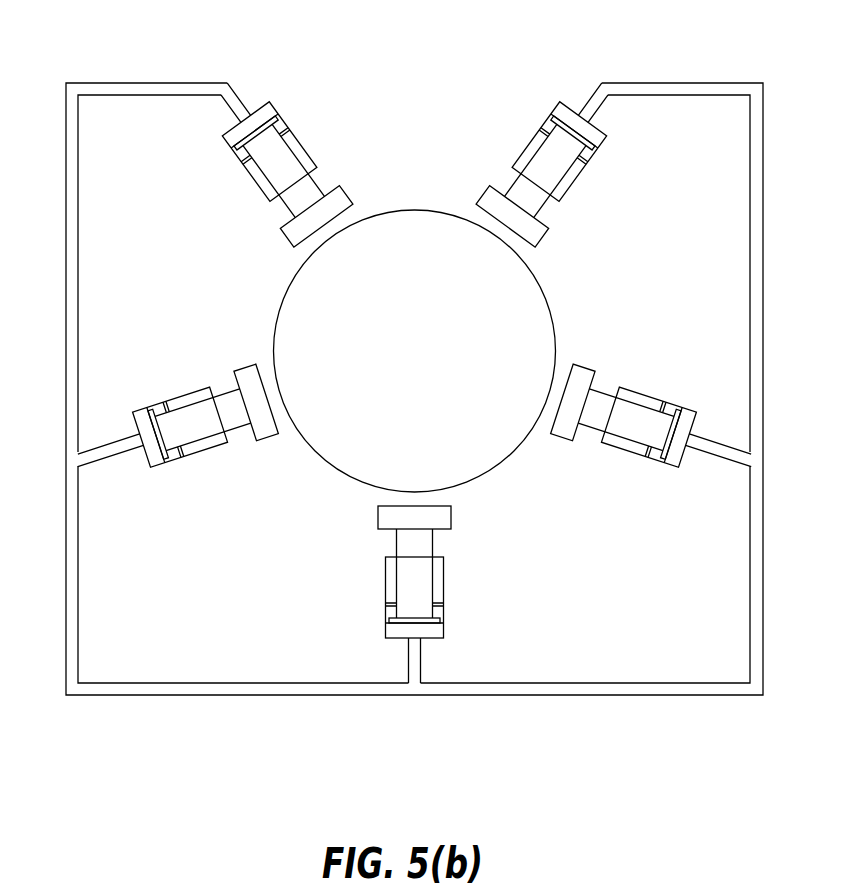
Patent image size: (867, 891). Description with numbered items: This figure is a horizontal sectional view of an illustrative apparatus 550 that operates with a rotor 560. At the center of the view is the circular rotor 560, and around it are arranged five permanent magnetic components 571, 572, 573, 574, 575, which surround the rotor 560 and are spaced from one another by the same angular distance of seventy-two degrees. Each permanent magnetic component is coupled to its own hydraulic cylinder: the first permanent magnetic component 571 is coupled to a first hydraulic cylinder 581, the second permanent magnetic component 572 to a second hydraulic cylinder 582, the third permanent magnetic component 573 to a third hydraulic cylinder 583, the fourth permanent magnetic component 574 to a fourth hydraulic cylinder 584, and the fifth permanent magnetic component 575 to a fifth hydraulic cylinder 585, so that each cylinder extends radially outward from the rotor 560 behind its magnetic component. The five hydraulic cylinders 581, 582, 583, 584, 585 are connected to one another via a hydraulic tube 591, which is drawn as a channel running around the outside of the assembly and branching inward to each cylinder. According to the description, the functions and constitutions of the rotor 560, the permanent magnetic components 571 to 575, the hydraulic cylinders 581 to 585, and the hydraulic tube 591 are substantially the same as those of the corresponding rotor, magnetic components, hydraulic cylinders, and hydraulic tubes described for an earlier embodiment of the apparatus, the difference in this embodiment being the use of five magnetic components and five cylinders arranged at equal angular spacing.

The apparatus 550 is at (102, 48).
The rotor 560 is at (443, 210).
The permanent magnetic component 571 is at (378, 518).
The permanent magnetic component 572 is at (562, 438).
The permanent magnetic component 573 is at (549, 232).
The permanent magnetic component 574 is at (347, 193).
The permanent magnetic component 575 is at (246, 367).
The hydraulic cylinder 581 is at (386, 632).
The hydraulic cylinder 582 is at (675, 467).
The hydraulic cylinder 583 is at (605, 140).
The hydraulic cylinder 584 is at (270, 105).
The hydraulic cylinder 585 is at (132, 405).
The hydraulic tube 591 is at (590, 697).